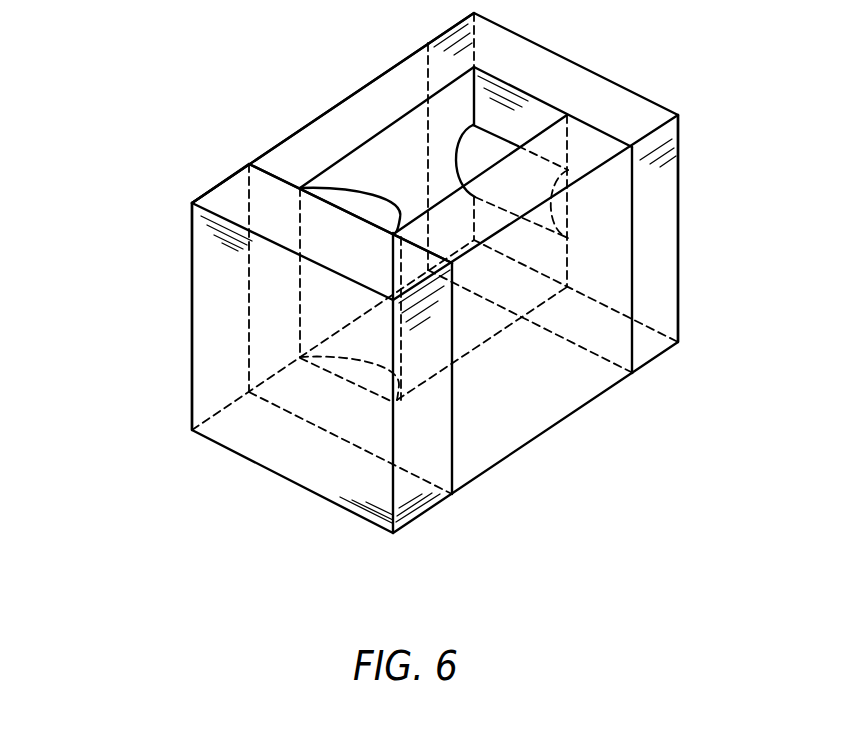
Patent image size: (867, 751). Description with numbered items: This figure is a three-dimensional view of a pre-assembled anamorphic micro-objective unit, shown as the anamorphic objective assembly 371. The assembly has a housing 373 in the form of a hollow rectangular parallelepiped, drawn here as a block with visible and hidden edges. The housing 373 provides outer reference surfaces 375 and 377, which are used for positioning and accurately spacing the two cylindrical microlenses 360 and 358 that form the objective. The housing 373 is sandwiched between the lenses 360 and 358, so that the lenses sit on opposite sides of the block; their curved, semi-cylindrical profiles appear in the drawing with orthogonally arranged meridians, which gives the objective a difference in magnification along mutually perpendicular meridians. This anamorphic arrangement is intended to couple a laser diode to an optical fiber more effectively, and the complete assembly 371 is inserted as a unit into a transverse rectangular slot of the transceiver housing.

The anamorphic objective assembly 371 is at (158, 325).
The housing 373 is at (333, 108).
The outer reference surface 375 is at (284, 319).
The outer reference surface 377 is at (612, 230).
The cylindrical microlens 358 is at (309, 244).
The cylindrical microlens 360 is at (440, 127).